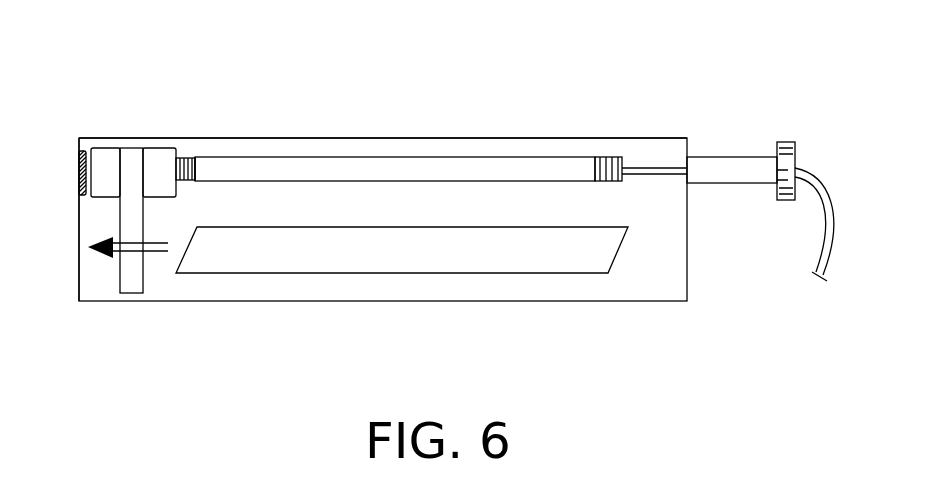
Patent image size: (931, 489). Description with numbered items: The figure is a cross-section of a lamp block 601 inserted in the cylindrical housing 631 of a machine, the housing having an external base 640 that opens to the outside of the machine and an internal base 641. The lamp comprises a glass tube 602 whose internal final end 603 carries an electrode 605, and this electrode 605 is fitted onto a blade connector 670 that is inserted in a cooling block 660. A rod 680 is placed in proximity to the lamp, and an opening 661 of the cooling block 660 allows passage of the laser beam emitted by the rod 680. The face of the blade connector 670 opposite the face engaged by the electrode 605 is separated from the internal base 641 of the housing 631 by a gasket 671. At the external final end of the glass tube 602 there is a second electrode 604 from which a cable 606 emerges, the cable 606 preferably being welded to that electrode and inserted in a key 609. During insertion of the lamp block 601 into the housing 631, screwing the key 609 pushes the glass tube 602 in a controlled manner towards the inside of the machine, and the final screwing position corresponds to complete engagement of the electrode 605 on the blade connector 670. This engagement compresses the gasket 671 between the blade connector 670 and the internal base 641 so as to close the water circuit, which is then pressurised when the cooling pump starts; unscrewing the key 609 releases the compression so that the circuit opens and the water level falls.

The block 601 is at (438, 143).
The glass tube 602 is at (382, 152).
The internal final end 603 is at (207, 151).
The electrode 604 is at (562, 152).
The electrode 605 is at (189, 151).
The cable 606 is at (811, 158).
The key 609 is at (716, 146).
The cylindrical housing 631 is at (320, 132).
The external base 640 is at (688, 302).
The internal base 641 is at (66, 272).
The cooling block 660 is at (130, 150).
The opening 661 is at (138, 272).
The blade connector 670 is at (159, 142).
The gasket 671 is at (75, 149).
The rod 680 is at (418, 256).